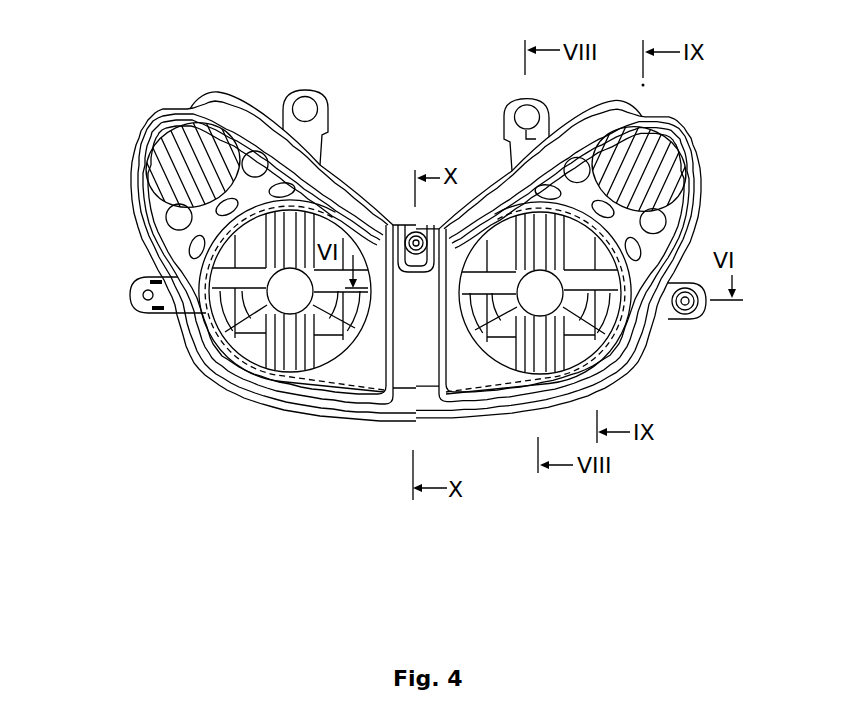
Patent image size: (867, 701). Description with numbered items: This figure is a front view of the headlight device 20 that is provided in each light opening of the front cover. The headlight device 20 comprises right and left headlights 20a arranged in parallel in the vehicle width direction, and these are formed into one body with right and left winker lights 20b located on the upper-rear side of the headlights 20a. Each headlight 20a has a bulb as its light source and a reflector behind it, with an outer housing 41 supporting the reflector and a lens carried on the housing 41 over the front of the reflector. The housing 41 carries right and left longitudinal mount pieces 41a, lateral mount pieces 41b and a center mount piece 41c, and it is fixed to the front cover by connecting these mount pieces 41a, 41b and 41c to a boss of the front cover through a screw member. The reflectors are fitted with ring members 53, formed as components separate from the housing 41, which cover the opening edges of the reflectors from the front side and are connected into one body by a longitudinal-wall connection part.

The headlight device 20 is at (423, 264).
The headlight 20a is at (347, 382).
The winker light 20b is at (165, 152).
The outer housing 41 is at (265, 412).
The longitudinal mount piece 41a is at (320, 92).
The lateral mount piece 41b is at (130, 297).
The center mount piece 41c is at (404, 222).
The ring member 53 is at (208, 336).